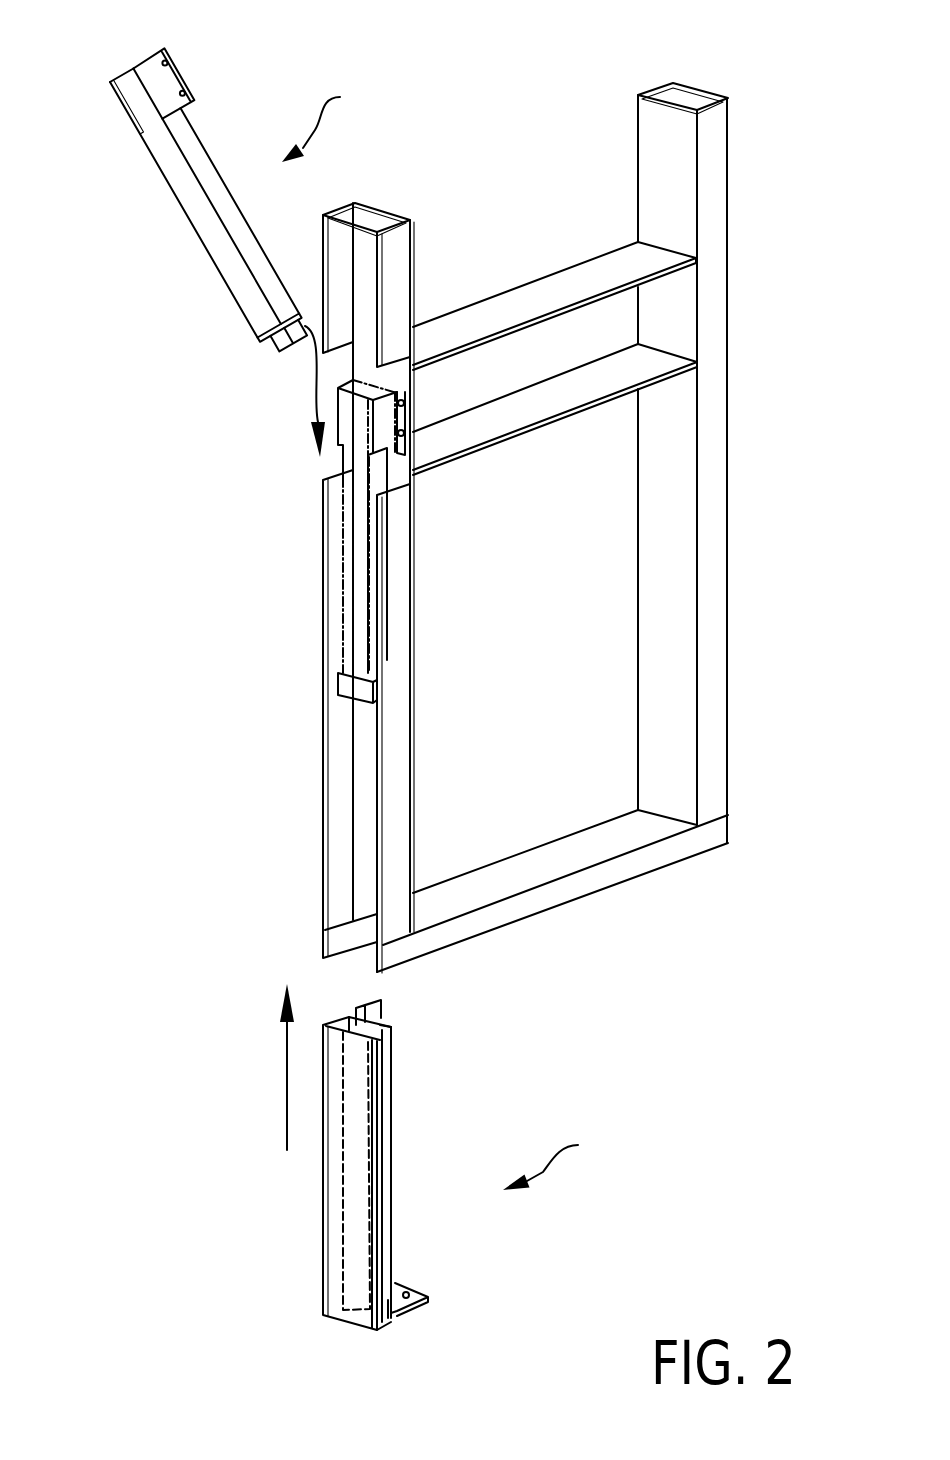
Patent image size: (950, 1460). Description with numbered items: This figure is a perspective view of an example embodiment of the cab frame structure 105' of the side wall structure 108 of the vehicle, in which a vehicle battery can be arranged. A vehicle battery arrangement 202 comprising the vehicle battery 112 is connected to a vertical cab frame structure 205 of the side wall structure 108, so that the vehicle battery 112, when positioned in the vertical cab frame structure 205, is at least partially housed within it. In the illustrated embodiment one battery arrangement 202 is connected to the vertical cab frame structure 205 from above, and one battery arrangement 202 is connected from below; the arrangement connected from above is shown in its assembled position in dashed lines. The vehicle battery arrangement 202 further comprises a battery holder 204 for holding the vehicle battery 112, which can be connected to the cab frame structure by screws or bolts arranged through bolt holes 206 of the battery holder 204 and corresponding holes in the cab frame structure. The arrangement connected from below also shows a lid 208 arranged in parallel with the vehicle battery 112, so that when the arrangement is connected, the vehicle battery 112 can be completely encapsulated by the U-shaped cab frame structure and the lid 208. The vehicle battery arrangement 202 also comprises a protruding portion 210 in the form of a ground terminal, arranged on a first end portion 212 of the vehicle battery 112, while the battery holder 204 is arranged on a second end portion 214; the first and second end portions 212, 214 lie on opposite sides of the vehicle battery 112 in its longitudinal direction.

The cab frame structure 105' is at (628, 463).
The side wall structure 108 is at (575, 852).
The vehicle battery 112 is at (192, 200).
The vehicle battery arrangement 202 is at (457, 636).
The battery holder 204 is at (152, 72).
The vertical cab frame structure 205 is at (367, 737).
The bolt holes 206 is at (167, 60).
The lid 208 is at (335, 1205).
The protruding portion 210 is at (273, 345).
The first end portion 212 is at (257, 310).
The second end portion 214 is at (137, 98).